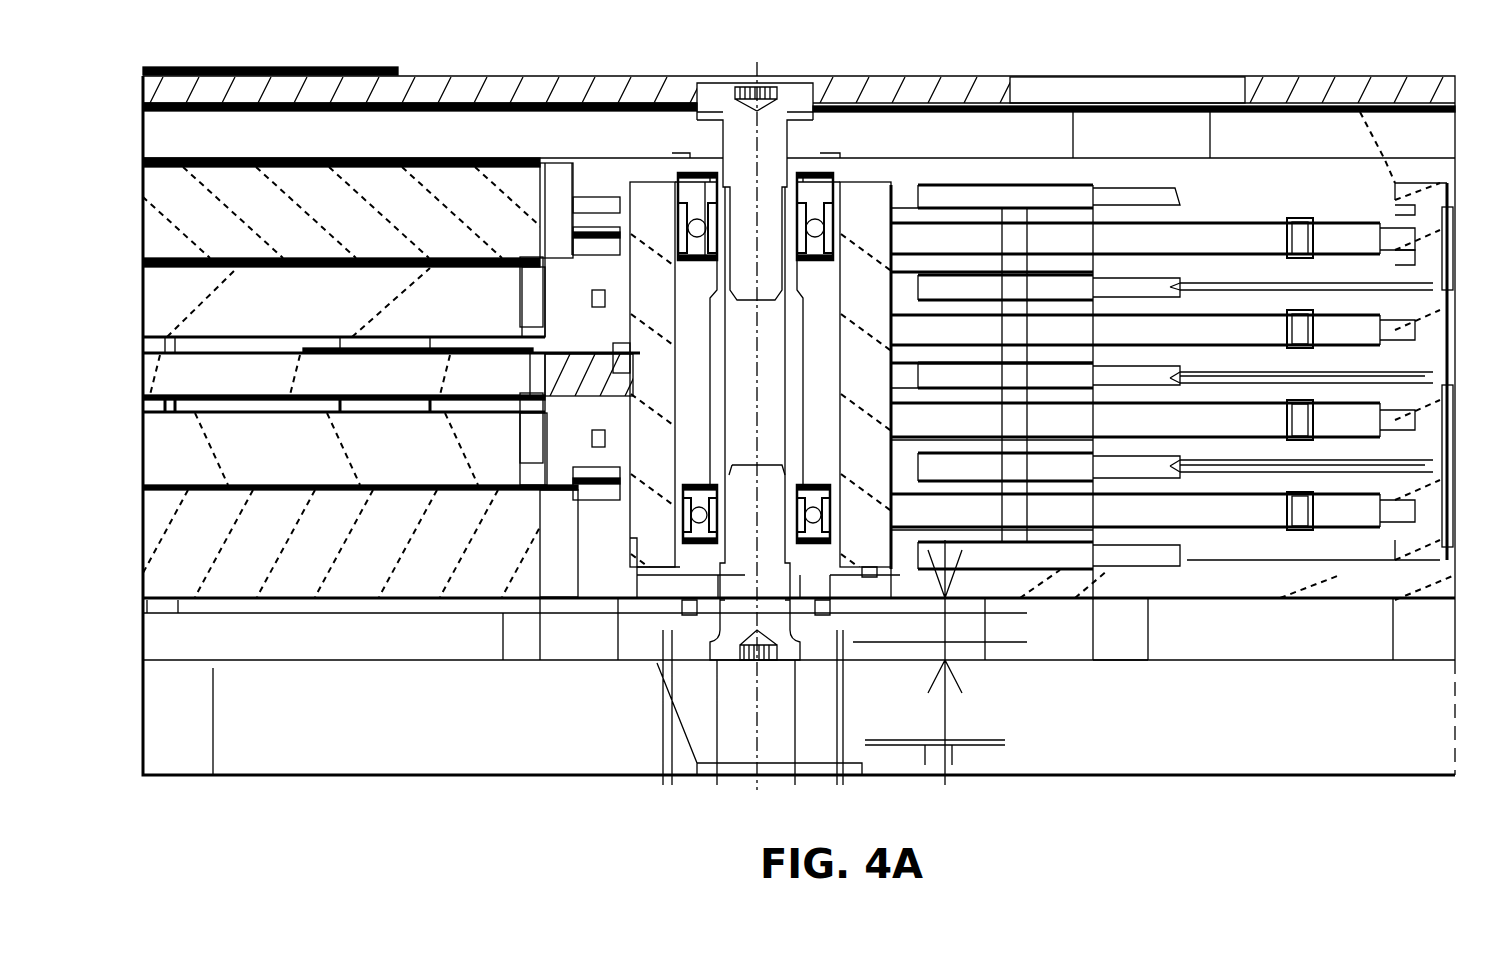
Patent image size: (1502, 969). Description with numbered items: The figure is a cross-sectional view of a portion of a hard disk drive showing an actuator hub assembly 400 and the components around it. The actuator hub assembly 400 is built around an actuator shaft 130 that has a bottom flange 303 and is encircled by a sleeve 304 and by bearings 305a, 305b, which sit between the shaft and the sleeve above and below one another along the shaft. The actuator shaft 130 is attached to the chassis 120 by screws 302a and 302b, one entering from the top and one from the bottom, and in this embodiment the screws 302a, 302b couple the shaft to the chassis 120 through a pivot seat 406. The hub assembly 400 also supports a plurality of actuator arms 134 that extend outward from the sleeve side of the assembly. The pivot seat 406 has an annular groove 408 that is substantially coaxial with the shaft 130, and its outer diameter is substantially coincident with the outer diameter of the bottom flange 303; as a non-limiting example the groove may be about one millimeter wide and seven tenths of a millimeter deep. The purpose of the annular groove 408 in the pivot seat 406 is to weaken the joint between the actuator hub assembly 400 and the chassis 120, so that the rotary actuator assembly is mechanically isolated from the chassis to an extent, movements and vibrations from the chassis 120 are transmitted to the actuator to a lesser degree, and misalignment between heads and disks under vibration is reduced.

The chassis 120 is at (1125, 633).
The actuator shaft 130 is at (818, 327).
The actuator arms 134 is at (945, 467).
The screw 302a is at (747, 575).
The screw 302b is at (757, 82).
The bottom flange 303 is at (812, 592).
The sleeve 304 is at (848, 200).
The bearing 305a is at (690, 520).
The bearing 305b is at (697, 223).
The actuator hub assembly 400 is at (768, 698).
The pivot seat 406 is at (647, 660).
The annular groove 408 is at (826, 618).